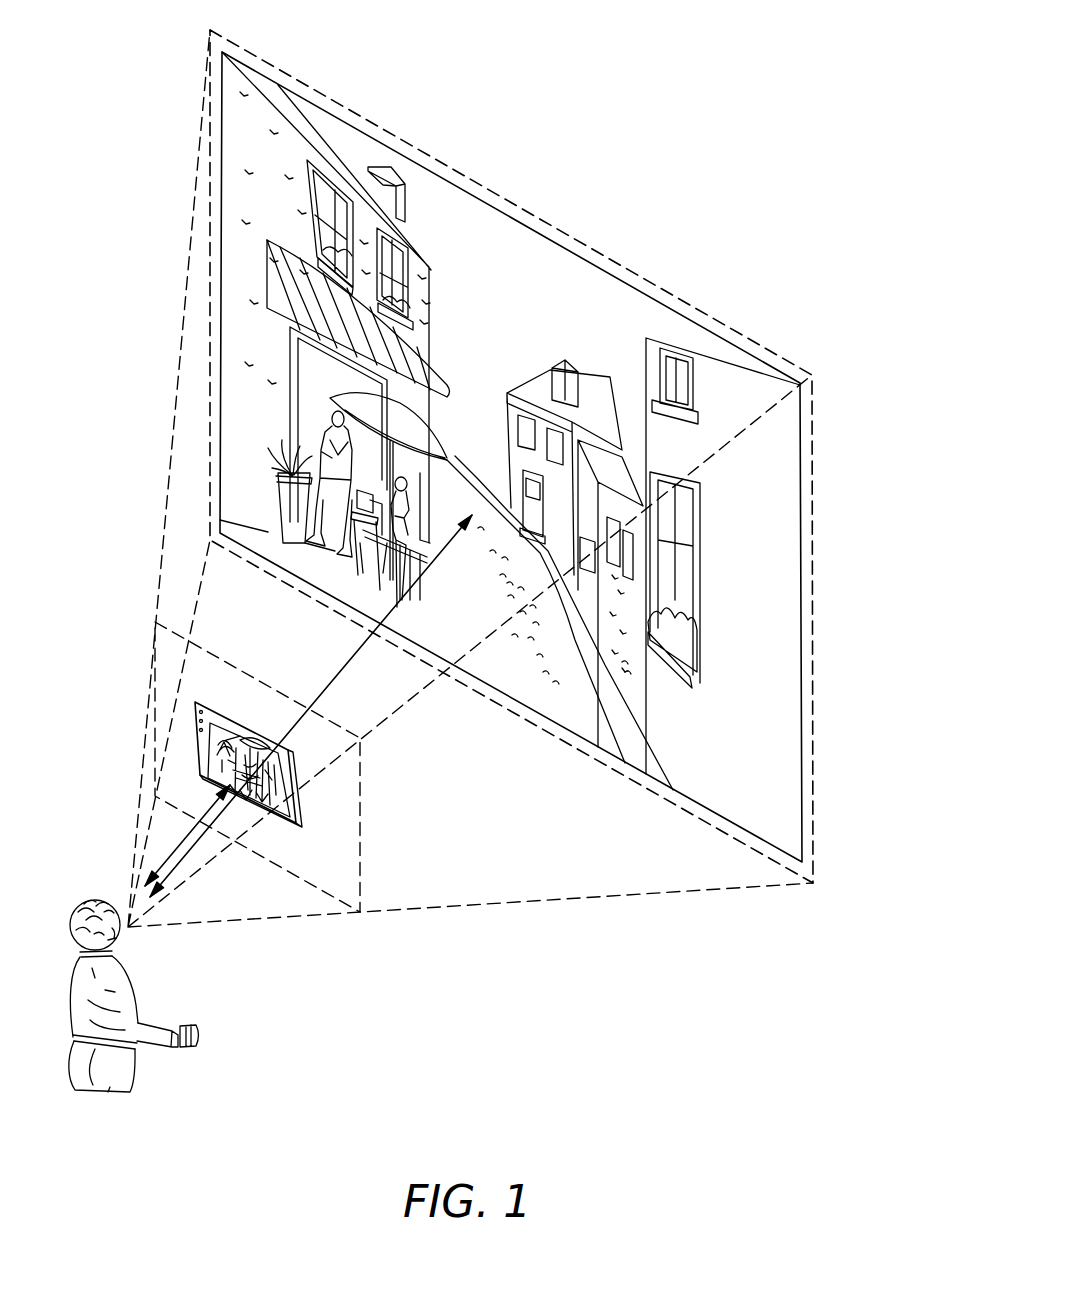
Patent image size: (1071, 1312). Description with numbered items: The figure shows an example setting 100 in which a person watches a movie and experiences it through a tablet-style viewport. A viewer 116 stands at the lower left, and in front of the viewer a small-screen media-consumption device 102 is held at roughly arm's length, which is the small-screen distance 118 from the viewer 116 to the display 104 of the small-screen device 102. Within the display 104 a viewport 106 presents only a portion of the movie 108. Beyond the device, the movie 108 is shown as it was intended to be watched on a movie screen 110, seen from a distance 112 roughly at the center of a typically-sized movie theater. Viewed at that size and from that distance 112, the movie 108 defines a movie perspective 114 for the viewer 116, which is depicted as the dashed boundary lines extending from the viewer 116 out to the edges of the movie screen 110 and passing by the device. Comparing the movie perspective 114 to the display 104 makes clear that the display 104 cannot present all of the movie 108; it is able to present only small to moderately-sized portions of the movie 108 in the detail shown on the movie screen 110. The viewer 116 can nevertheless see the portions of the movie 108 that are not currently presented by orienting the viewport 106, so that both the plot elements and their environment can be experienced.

The setting 100 is at (755, 56).
The small-screen media-consumption device 102 is at (287, 867).
The display 104 is at (277, 803).
The viewport 106 is at (278, 768).
The movie 108 is at (551, 276).
The movie screen 110 is at (652, 290).
The distance 112 is at (347, 665).
The movie perspective 114 is at (783, 868).
The viewer 116 is at (134, 1012).
The small-screen distance 118 is at (185, 847).